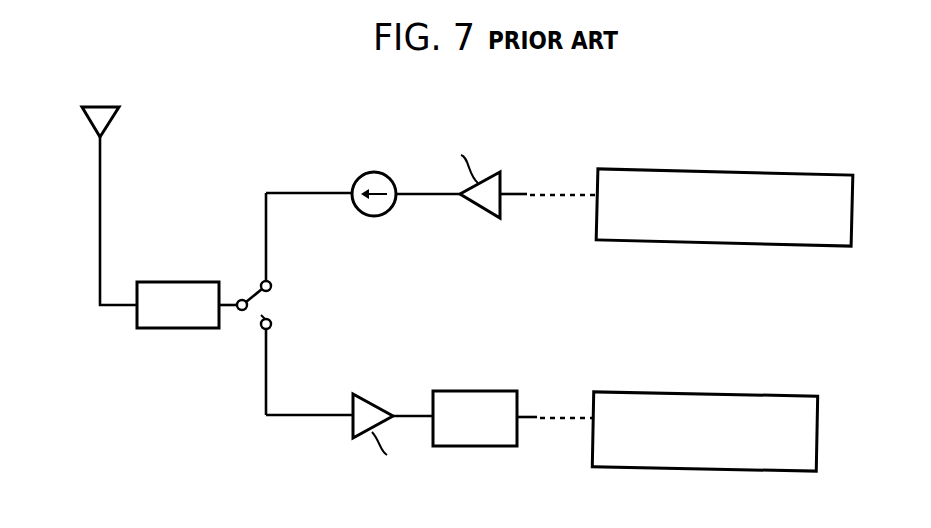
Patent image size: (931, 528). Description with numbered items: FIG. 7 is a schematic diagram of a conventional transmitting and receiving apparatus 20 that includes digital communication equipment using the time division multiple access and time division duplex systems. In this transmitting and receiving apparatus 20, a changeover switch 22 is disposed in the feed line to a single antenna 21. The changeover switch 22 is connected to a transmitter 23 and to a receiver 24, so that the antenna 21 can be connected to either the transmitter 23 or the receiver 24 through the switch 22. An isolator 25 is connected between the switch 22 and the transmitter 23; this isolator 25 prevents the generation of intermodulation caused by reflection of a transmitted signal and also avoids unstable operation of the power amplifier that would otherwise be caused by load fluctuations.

The transmitting and receiving apparatus 20 is at (270, 122).
The antenna 21 is at (100, 168).
The changeover switch 22 is at (252, 278).
The transmitter 23 is at (625, 157).
The receiver 24 is at (635, 382).
The isolator 25 is at (373, 172).